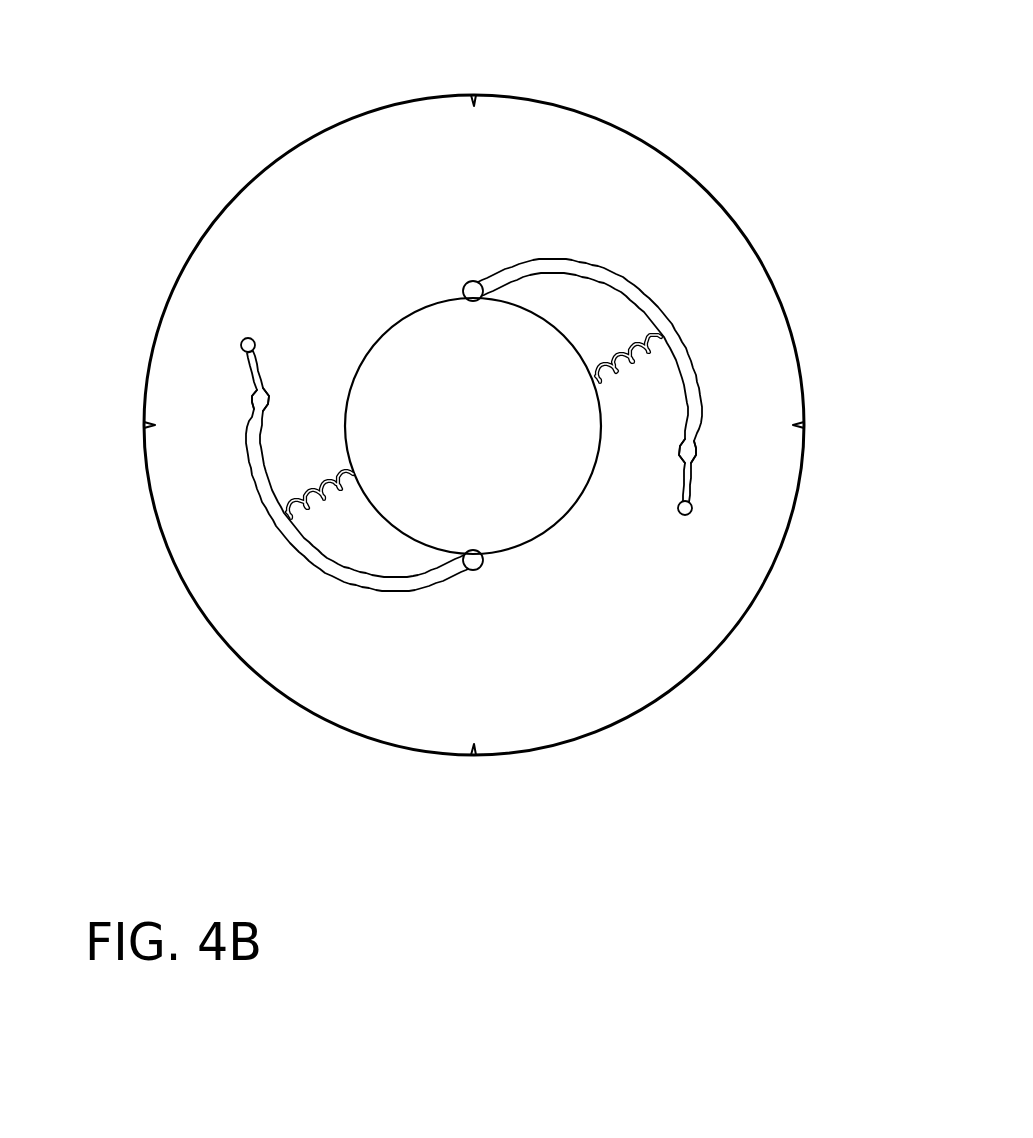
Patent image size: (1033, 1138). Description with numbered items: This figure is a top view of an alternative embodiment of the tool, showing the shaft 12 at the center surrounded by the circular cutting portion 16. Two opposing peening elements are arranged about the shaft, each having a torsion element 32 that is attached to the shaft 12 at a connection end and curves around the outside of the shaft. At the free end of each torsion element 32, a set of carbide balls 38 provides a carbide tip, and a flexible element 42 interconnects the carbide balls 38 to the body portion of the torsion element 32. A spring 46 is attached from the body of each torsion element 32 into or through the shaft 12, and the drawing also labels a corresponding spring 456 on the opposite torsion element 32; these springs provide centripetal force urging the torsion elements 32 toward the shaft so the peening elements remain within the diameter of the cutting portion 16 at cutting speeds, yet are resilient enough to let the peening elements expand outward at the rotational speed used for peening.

The shaft 12 is at (428, 378).
The cutting portion 16 is at (553, 103).
The torsion element 32 is at (630, 272).
The carbide balls 38 is at (246, 338).
The flexible element 42 is at (252, 389).
The spring 46 is at (330, 478).
The spring member 456 is at (620, 360).